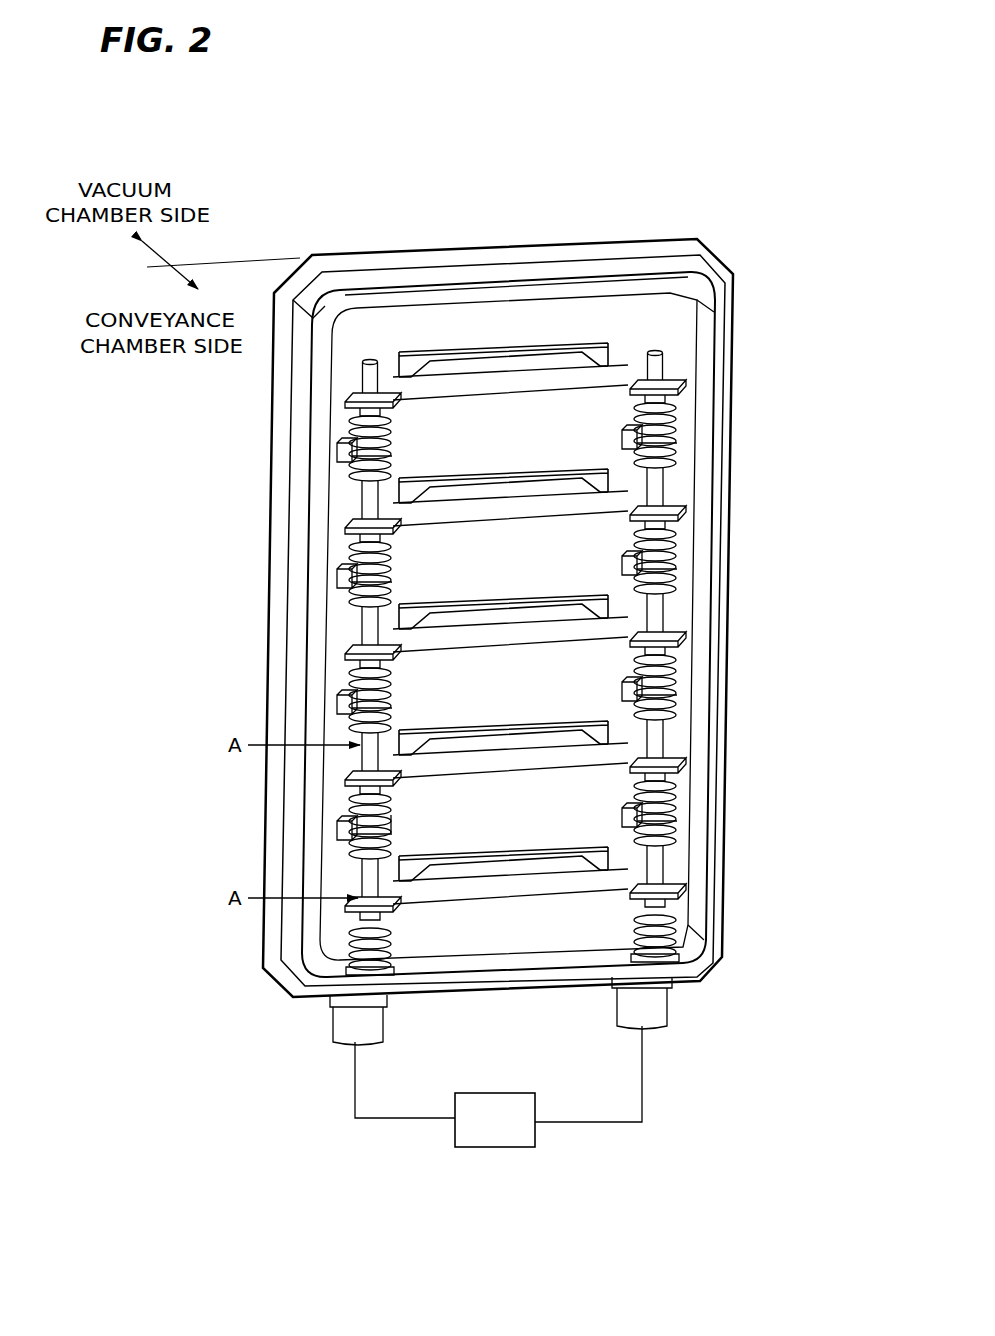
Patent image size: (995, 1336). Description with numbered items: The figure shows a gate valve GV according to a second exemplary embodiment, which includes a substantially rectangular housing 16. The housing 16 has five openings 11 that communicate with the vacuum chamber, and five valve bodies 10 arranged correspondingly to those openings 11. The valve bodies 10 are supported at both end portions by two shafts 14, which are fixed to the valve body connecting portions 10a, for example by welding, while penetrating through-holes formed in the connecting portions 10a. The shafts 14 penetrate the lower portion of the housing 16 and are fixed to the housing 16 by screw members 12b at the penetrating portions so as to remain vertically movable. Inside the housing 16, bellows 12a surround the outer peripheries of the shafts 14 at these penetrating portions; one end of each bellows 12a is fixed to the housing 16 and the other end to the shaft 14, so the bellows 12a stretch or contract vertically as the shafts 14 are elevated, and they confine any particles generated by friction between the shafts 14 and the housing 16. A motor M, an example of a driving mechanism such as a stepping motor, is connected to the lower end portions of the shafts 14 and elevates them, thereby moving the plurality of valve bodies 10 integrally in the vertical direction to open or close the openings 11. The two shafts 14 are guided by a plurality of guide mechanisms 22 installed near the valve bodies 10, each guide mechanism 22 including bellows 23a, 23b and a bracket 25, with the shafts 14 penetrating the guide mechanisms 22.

The gate valve GV is at (746, 262).
The valve body 10 is at (511, 393).
The valve body connecting portion 10a is at (387, 824).
The opening 11 is at (484, 347).
The bellows 12a is at (398, 945).
The screw member 12b is at (335, 1010).
The shaft 14 is at (371, 361).
The housing 16 is at (707, 853).
The guide mechanism 22 is at (404, 454).
The bellows 23a is at (340, 800).
The bellows 23b is at (338, 855).
The bracket 25 is at (333, 832).
The motor M is at (495, 1120).